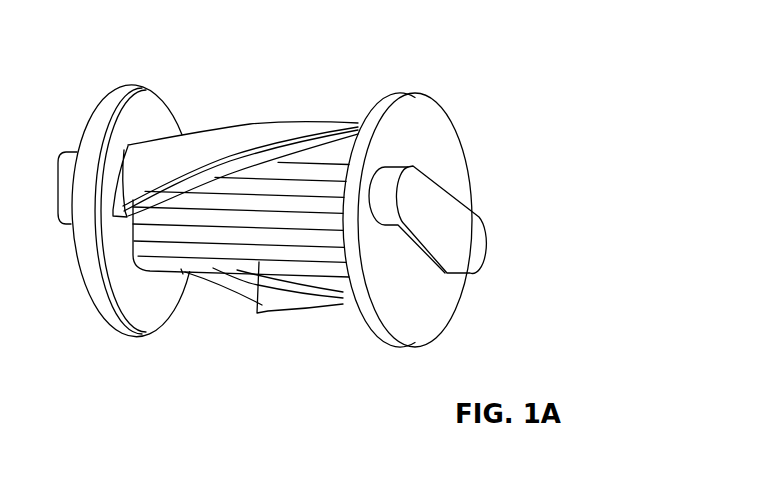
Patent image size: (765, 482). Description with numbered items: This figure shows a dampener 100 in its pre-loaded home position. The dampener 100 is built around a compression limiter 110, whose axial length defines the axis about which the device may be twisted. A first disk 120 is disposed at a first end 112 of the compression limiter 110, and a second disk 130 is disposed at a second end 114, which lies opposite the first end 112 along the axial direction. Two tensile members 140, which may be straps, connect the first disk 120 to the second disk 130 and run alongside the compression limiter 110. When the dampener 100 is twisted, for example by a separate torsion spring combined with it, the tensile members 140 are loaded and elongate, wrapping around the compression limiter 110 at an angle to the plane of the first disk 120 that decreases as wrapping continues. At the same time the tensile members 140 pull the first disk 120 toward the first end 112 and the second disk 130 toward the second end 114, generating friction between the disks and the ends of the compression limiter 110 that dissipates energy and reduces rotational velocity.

The dampener 100 is at (466, 43).
The compression limiter 110 is at (252, 286).
The first end 112 is at (110, 297).
The second end 114 is at (333, 258).
The first disk 120 is at (150, 317).
The second disk 130 is at (432, 318).
The tensile member 140 is at (263, 131).